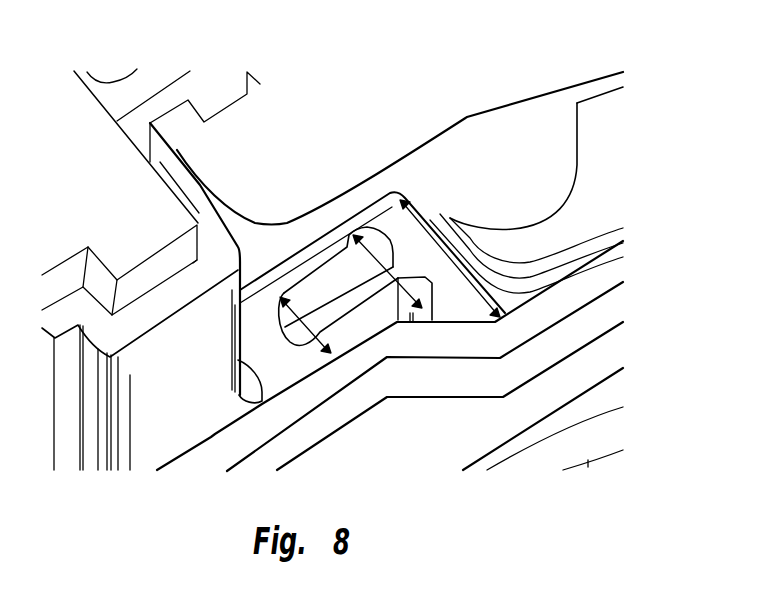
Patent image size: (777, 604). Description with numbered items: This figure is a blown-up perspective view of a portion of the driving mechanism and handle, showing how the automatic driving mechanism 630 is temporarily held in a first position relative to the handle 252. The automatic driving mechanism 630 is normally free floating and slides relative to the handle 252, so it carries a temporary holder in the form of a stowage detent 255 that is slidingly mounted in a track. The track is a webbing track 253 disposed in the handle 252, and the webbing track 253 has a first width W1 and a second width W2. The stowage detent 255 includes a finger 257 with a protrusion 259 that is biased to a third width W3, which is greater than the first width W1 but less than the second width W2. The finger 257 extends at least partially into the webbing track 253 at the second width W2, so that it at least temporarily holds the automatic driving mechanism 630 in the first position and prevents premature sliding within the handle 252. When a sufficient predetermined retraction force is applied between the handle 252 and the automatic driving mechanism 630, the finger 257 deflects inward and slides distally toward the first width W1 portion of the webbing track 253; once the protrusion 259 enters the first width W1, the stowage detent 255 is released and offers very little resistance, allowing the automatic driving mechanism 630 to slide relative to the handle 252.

The automatic driving mechanism 630 is at (413, 81).
The handle 252 is at (607, 350).
The webbing track 253 is at (287, 413).
The stowage detent 255 is at (440, 286).
The finger 257 is at (378, 313).
The protrusion 259 is at (413, 323).
The first width W1 is at (290, 375).
The second width W2 is at (432, 226).
The third width W3 is at (398, 300).